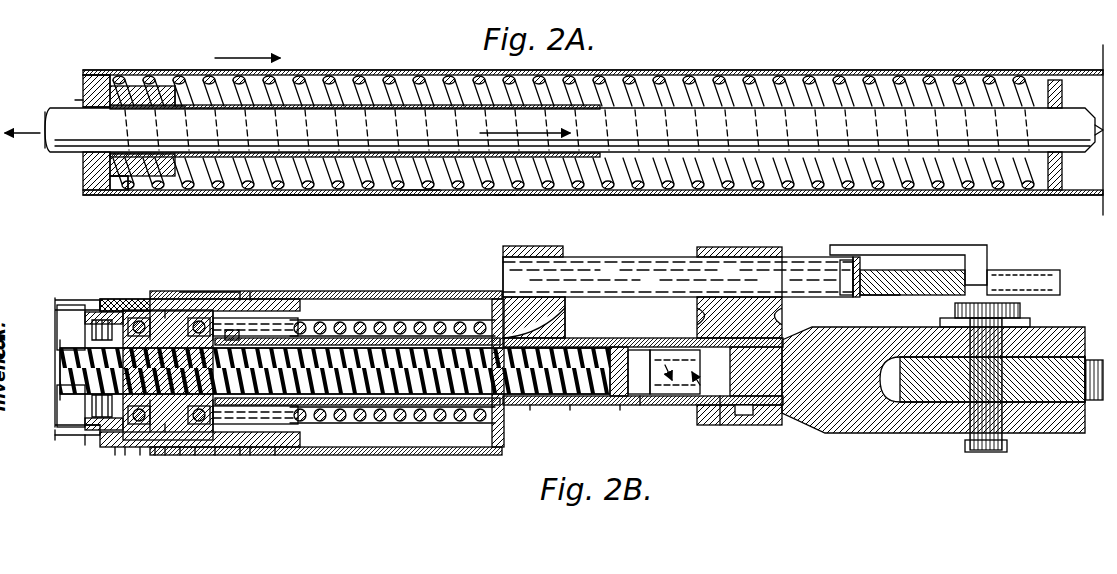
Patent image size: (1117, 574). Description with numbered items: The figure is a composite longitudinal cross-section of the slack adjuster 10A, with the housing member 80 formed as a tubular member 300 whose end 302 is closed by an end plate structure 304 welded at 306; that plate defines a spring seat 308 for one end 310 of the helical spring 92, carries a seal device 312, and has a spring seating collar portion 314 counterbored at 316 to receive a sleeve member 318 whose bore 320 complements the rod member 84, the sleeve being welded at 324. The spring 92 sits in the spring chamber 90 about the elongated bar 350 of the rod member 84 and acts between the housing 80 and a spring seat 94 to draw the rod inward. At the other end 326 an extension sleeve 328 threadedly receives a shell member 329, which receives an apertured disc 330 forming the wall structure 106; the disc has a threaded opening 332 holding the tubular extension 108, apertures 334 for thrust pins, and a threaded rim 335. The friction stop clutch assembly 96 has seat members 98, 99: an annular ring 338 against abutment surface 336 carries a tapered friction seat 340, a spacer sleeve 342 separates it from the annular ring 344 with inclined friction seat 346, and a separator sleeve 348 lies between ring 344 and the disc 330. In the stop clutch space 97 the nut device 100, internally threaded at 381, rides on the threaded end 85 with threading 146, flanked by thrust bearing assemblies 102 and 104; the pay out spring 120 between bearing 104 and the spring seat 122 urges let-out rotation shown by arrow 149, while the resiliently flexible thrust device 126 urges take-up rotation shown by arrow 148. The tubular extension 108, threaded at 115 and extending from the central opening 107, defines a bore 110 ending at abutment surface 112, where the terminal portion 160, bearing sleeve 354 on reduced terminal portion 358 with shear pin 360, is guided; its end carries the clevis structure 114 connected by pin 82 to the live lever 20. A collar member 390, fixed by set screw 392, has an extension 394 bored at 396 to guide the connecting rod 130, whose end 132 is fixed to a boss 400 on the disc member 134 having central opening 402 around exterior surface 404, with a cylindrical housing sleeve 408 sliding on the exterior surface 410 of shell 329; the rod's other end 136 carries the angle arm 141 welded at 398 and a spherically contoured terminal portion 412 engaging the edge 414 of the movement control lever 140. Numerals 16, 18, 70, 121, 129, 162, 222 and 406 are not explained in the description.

In FIG. 2A, the slack adjuster 10A is at (745, 68).
In FIG. 2A, the support 16 is at (330, 8).
In FIG. 2A, the support 18 is at (367, 10).
In FIG. 2A, the member 70 is at (400, 0).
In FIG. 2A, the housing member 80 is at (305, 196).
In FIG. 2B, the pin 82 is at (990, 355).
In FIG. 2A, the rod member 84 is at (70, 152).
In FIG. 2B, the threaded end 85 is at (587, 317).
In FIG. 2A, the spring chamber 90 is at (460, 182).
In FIG. 2A, the helical spring 92 is at (505, 193).
In FIG. 2A, the spring seat 94 is at (1063, 172).
In FIG. 2B, the friction stop clutch assembly 96 is at (168, 300).
In FIG. 2B, the stop clutch space 97 is at (213, 300).
In FIG. 2B, the seat member 98 is at (215, 300).
In FIG. 2B, the seat member 99 is at (133, 305).
In FIG. 2B, the nut device 100 is at (157, 455).
In FIG. 2B, the thrust bearing assembly 102 is at (238, 305).
In FIG. 2B, the thrust bearing assembly 104 is at (100, 447).
In FIG. 2B, the wall structure 106 is at (310, 292).
In FIG. 2B, the central opening 107 is at (268, 300).
In FIG. 2B, the tubular extension 108 is at (562, 407).
In FIG. 2B, the bore 110 is at (640, 406).
In FIG. 2B, the abutment surface 112 is at (722, 426).
In FIG. 2B, the clevis structure 114 is at (852, 433).
In FIG. 2B, the screw threading 115 is at (252, 455).
In FIG. 2B, the pay out spring 120 is at (100, 315).
In FIG. 2B, the tube assembly 121 is at (608, 255).
In FIG. 2B, the spring seat 122 is at (58, 438).
In FIG. 2B, the resiliently flexible thrust device 126 is at (300, 447).
In FIG. 2B, the sleeve 129 is at (242, 455).
In FIG. 2B, the connecting rod 130 is at (645, 262).
In FIG. 2B, the end 132 is at (503, 275).
In FIG. 2B, the disc member 134 is at (503, 440).
In FIG. 2B, the end 136 is at (858, 268).
In FIG. 2B, the movement control lever 140 is at (950, 250).
In FIG. 2B, the angle arm 141 is at (992, 275).
In FIG. 2B, the threading 146 is at (532, 406).
In FIG. 2B, the arrow 148 is at (702, 406).
In FIG. 2B, the arrow 149 is at (672, 406).
In FIG. 2B, the terminal portion 160 is at (622, 406).
In FIG. 2A, the direction of motion 162 is at (20, 165).
In FIG. 2A, the spring coil 222 is at (420, 180).
In FIG. 2A, the tubular member 300 is at (430, 58).
In FIG. 2A, the end 302 is at (96, 70).
In FIG. 2A, the end plate structure 304 is at (83, 85).
In FIG. 2A, the weld 306 is at (85, 190).
In FIG. 2A, the spring seat 308 is at (118, 72).
In FIG. 2A, the end 310 is at (122, 190).
In FIG. 2A, the seal device 312 is at (83, 100).
In FIG. 2A, the spring seating collar portion 314 is at (166, 90).
In FIG. 2A, the counterbore 316 is at (150, 110).
In FIG. 2A, the sleeve member 318 is at (262, 109).
In FIG. 2A, the bore 320 is at (358, 109).
In FIG. 2A, the weld 324 is at (182, 103).
In FIG. 2B, the end 326 is at (60, 310).
In FIG. 2B, the extension sleeve 328 is at (85, 430).
In FIG. 2B, the shell member 329 is at (95, 300).
In FIG. 2B, the apertured disc 330 is at (278, 455).
In FIG. 2B, the internally threaded opening 332 is at (197, 455).
In FIG. 2B, the apertures 334 is at (255, 292).
In FIG. 2B, the threaded rim 335 is at (298, 300).
In FIG. 2B, the abutment surface 336 is at (116, 455).
In FIG. 2B, the annular ring 338 is at (127, 455).
In FIG. 2B, the tapered friction seat 340 is at (142, 455).
In FIG. 2B, the spacer sleeve 342 is at (205, 292).
In FIG. 2B, the annular ring 344 is at (182, 455).
In FIG. 2B, the inclined friction seat 346 is at (167, 455).
In FIG. 2B, the separator sleeve 348 is at (217, 455).
In FIG. 2A, the elongated bar 350 is at (683, 118).
In FIG. 2B, the bearing sleeve 354 is at (572, 406).
In FIG. 2B, the reduced terminal portion 358 is at (652, 352).
In FIG. 2B, the shear pin 360 is at (150, 300).
In FIG. 2B, the internal threading 381 is at (168, 375).
In FIG. 2B, the collar member 390 is at (765, 425).
In FIG. 2B, the set screw 392 is at (740, 425).
In FIG. 2B, the extension 394 is at (770, 257).
In FIG. 2B, the bore 396 is at (742, 250).
In FIG. 2B, the weld 398 is at (848, 262).
In FIG. 2B, the boss 400 is at (545, 246).
In FIG. 2B, the central opening 402 is at (556, 338).
In FIG. 2B, the exterior surface 404 is at (578, 340).
In FIG. 2B, the lower ball row 406 is at (495, 452).
In FIG. 2B, the cylindrical housing sleeve 408 is at (410, 452).
In FIG. 2B, the exterior surface 410 is at (108, 298).
In FIG. 2B, the spherically contoured terminal portion 412 is at (905, 270).
In FIG. 2B, the edge 414 is at (885, 296).
In FIG. 2B, the live lever 20 is at (1030, 400).